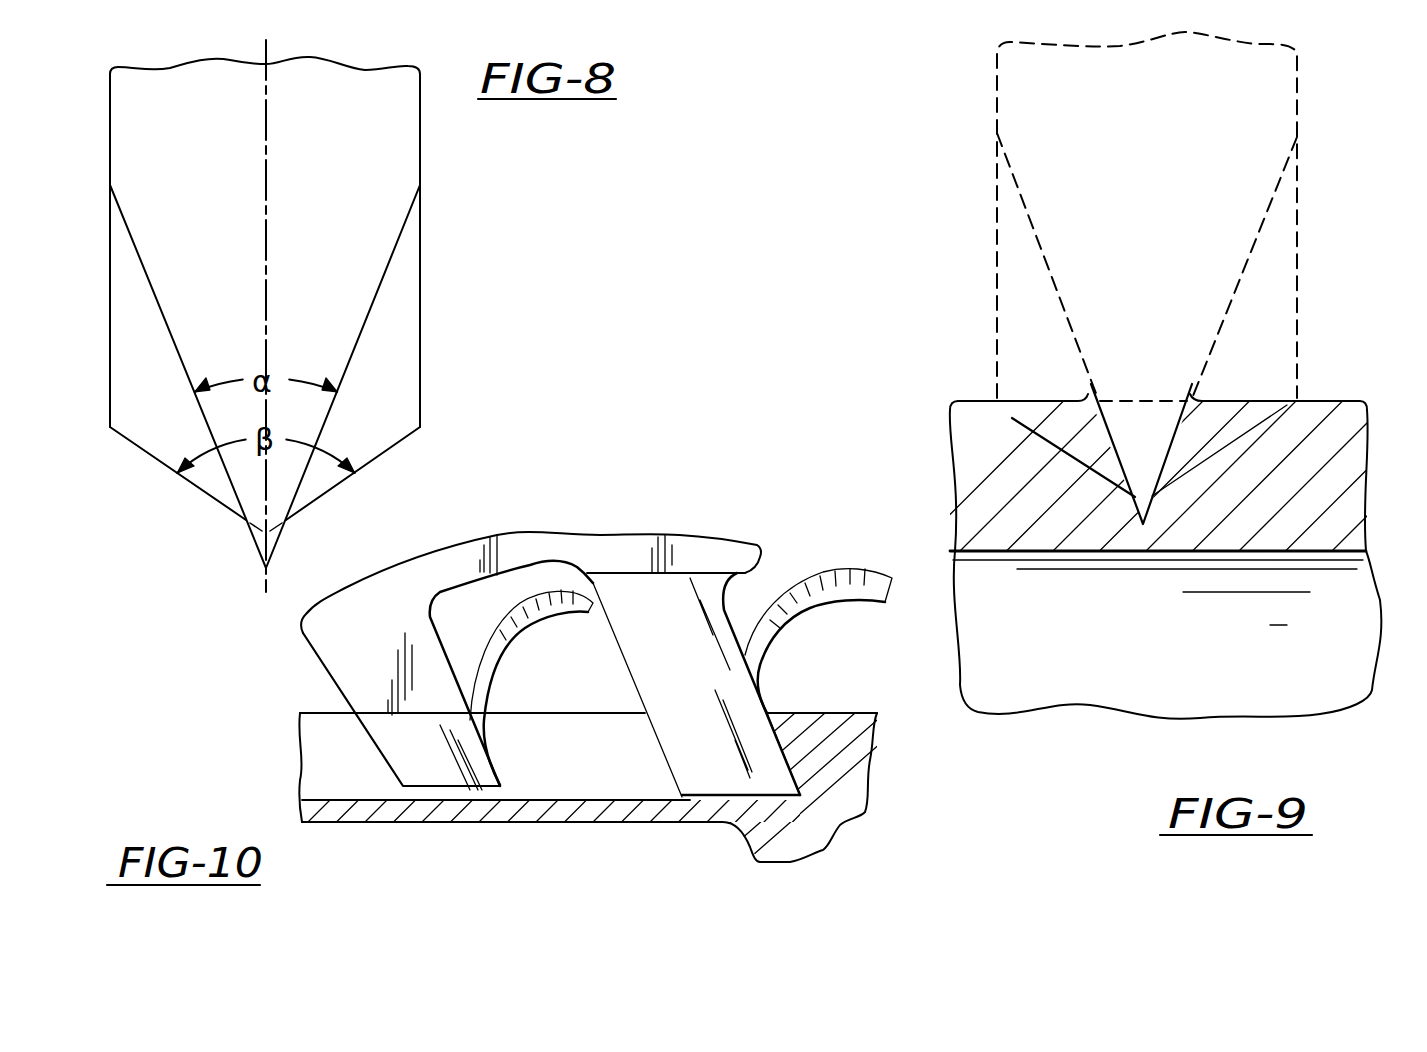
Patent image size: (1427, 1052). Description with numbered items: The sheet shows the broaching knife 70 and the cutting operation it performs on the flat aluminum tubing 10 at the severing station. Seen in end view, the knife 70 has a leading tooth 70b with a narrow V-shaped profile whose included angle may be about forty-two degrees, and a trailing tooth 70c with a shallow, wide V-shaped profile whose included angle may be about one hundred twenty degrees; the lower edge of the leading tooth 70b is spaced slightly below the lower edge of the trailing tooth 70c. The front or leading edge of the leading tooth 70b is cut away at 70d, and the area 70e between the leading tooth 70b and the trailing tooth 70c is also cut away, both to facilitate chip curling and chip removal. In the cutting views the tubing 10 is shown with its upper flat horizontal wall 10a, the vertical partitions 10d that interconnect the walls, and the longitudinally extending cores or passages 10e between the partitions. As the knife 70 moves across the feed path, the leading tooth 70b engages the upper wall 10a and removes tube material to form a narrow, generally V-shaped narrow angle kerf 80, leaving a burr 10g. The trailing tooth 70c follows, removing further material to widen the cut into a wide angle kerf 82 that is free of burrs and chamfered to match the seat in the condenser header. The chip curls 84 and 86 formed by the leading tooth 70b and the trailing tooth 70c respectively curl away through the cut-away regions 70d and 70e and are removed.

In FIG. 9, the flat aluminum tubing 10 is at (928, 410).
In FIG. 9, the upper flat horizontal wall 10a is at (1336, 400).
In FIG. 10, the upper flat horizontal wall 10a is at (837, 712).
In FIG. 10, the vertical partition 10d is at (803, 850).
In FIG. 10, the core or passage 10e is at (553, 823).
In FIG. 9, the burr 10g is at (1089, 392).
In FIG. 10, the broaching knife 70 is at (658, 522).
In FIG. 8, the leading tooth 70b is at (357, 353).
In FIG. 10, the leading tooth 70b is at (696, 687).
In FIG. 8, the trailing tooth 70c is at (421, 218).
In FIG. 10, the trailing tooth 70c is at (401, 705).
In FIG. 10, the cut-away front edge of leading tooth 70d is at (731, 587).
In FIG. 10, the cut-away area between teeth 70e is at (521, 563).
In FIG. 9, the narrow angle kerf 80 is at (1125, 440).
In FIG. 10, the narrow angle kerf 80 is at (571, 732).
In FIG. 9, the wide angle kerf 82 is at (1040, 427).
In FIG. 10, the wide angle kerf 82 is at (300, 722).
In FIG. 10, the chip curl 84 is at (833, 600).
In FIG. 10, the chip curl 86 is at (522, 625).